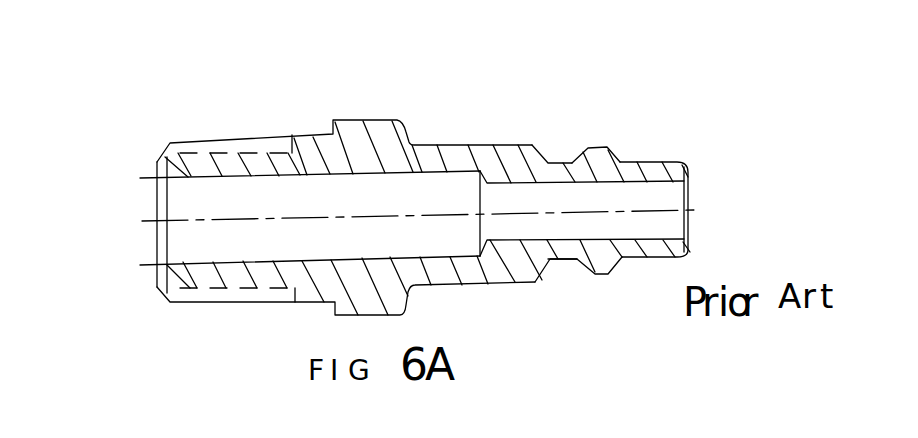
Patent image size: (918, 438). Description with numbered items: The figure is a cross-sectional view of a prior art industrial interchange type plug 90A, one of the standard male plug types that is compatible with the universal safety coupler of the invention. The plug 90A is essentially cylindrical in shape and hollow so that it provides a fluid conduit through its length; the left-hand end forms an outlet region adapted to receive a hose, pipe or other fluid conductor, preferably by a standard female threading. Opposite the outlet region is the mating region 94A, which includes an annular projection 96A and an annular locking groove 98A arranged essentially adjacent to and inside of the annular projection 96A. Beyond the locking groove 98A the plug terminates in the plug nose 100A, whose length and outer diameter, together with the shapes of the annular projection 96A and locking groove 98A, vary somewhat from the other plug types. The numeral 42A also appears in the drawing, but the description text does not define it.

The industrial interchange type plug 90A is at (475, 63).
The bore passage 42A is at (180, 204).
The mating region 94A is at (637, 97).
The annular projection 96A is at (602, 150).
The annular locking groove 98A is at (570, 267).
The plug nose 100A is at (692, 170).